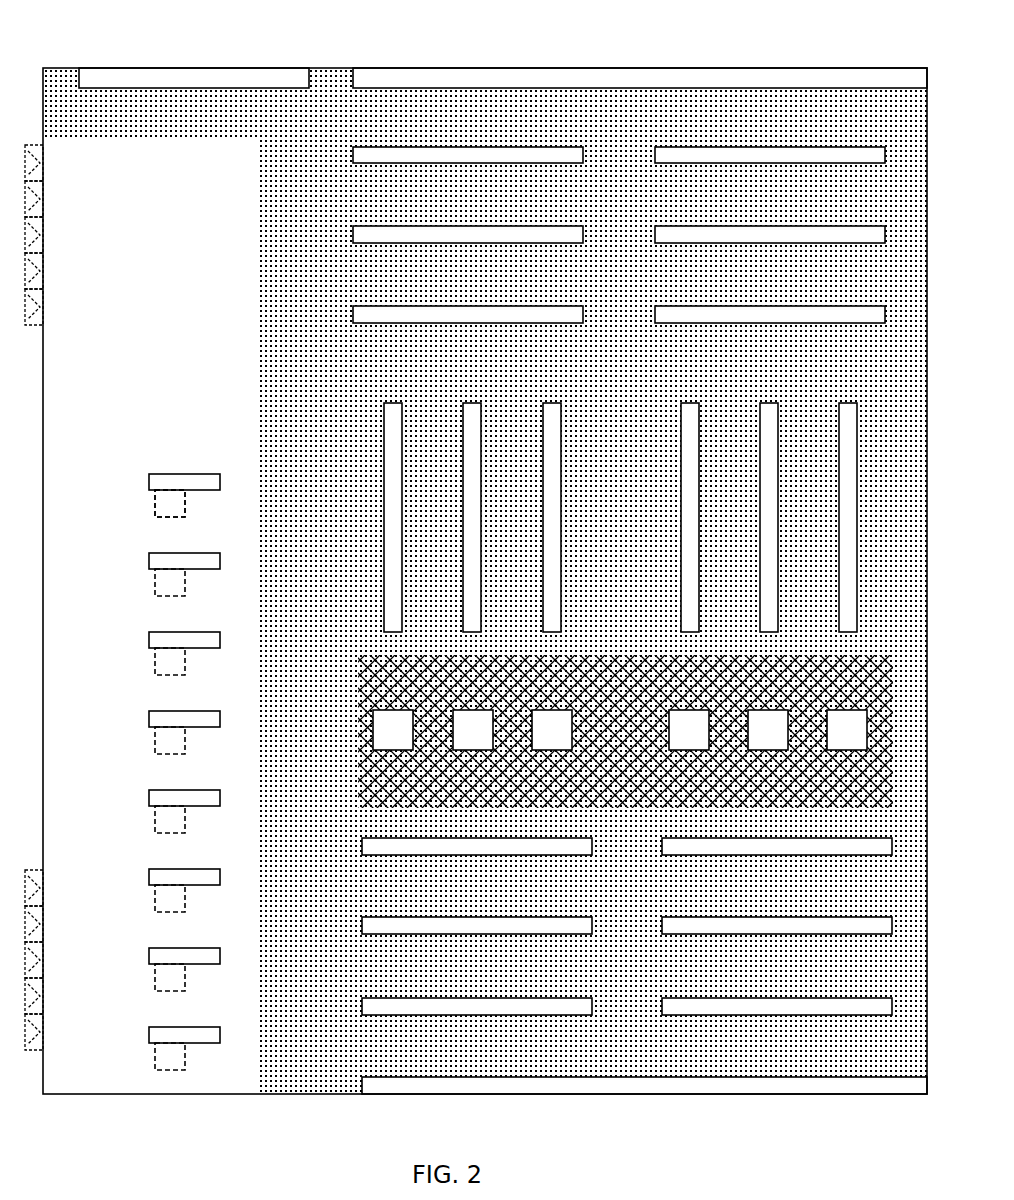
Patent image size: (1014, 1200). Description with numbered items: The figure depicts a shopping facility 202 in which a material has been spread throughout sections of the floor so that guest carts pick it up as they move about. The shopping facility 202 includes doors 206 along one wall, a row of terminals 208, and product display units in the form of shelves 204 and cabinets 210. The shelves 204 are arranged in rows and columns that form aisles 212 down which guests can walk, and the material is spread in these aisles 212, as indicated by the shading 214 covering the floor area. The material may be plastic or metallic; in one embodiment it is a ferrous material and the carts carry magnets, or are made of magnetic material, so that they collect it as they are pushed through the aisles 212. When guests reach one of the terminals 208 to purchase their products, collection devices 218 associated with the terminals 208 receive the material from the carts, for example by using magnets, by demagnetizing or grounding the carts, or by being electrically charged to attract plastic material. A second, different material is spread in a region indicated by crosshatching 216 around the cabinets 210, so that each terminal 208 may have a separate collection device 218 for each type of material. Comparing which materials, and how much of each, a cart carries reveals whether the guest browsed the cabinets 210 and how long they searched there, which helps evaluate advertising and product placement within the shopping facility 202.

The shopping facility 202 is at (54, 68).
The shelves 204 is at (352, 156).
The doors 206 is at (28, 326).
The terminals 208 is at (166, 474).
The cabinets 210 is at (373, 728).
The aisles 212 is at (378, 886).
The shading 214 is at (279, 364).
The crosshatching 216 is at (632, 656).
The collection devices 218 is at (157, 505).